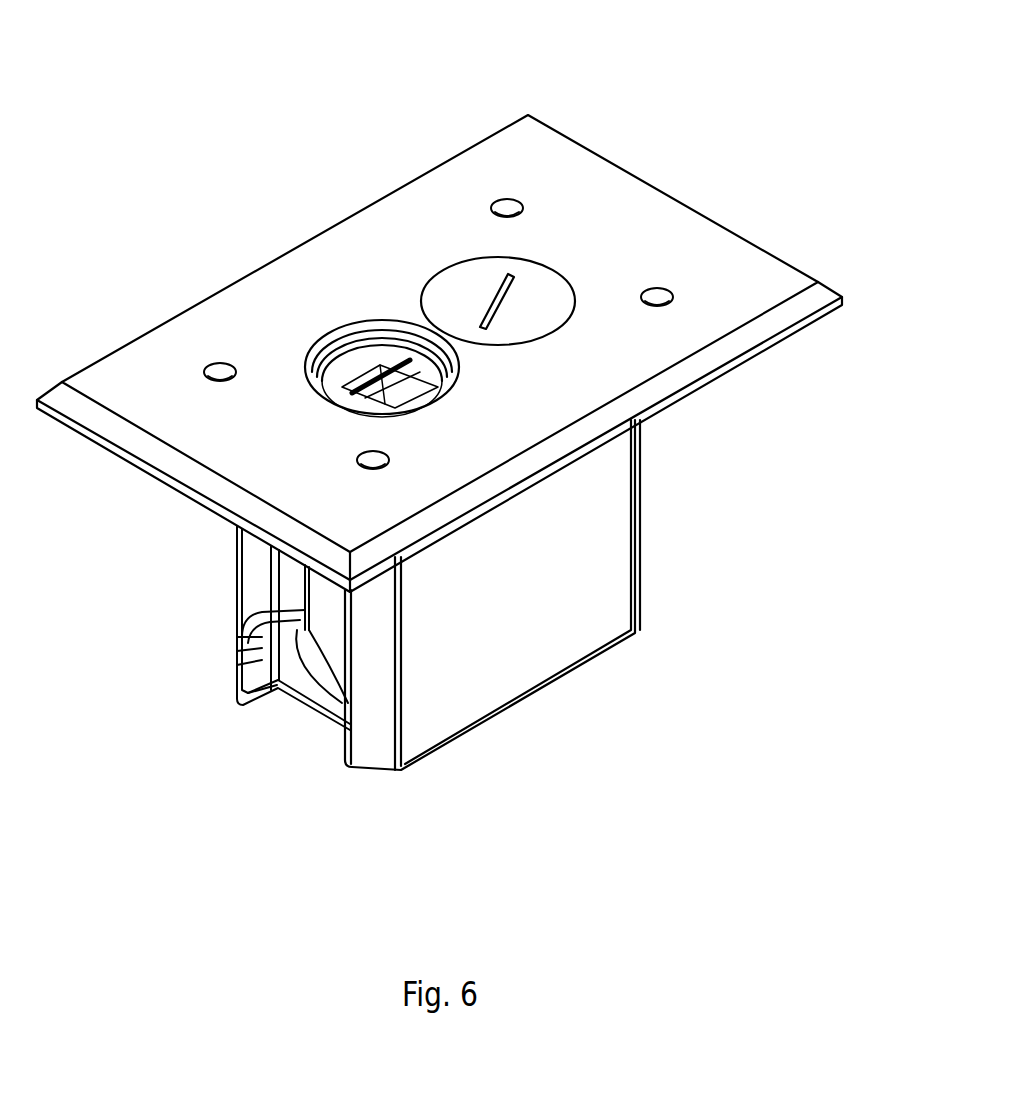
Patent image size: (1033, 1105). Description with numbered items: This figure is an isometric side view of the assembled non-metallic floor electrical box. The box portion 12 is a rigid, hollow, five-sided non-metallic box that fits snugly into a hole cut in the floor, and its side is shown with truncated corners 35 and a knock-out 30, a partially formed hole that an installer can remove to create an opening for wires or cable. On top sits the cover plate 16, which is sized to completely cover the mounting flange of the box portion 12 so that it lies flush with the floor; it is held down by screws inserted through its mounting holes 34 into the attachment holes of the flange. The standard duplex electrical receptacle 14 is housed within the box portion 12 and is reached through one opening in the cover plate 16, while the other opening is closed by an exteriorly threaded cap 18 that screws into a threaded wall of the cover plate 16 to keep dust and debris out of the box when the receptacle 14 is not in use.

The box portion 12 is at (605, 617).
The standard duplex electrical receptacle 14 is at (268, 185).
The cover plate 16 is at (535, 290).
The cap 18 is at (533, 137).
The knock-out 30 is at (317, 665).
The mounting hole 34 is at (214, 368).
The truncated corner 35 is at (373, 658).